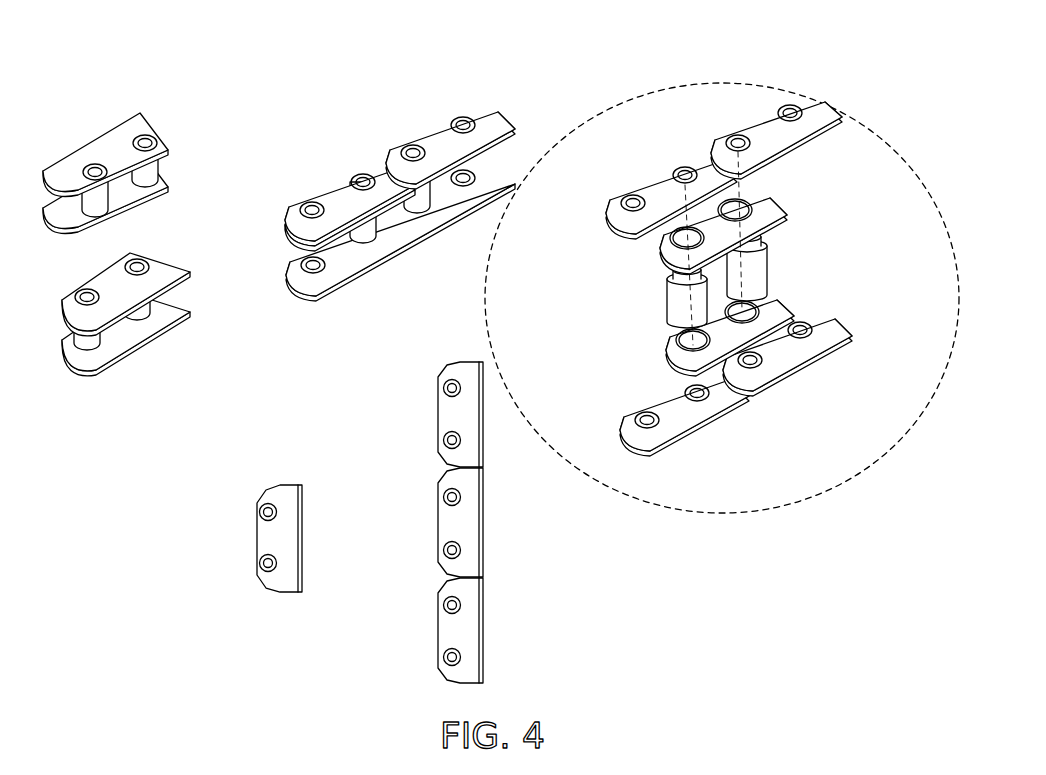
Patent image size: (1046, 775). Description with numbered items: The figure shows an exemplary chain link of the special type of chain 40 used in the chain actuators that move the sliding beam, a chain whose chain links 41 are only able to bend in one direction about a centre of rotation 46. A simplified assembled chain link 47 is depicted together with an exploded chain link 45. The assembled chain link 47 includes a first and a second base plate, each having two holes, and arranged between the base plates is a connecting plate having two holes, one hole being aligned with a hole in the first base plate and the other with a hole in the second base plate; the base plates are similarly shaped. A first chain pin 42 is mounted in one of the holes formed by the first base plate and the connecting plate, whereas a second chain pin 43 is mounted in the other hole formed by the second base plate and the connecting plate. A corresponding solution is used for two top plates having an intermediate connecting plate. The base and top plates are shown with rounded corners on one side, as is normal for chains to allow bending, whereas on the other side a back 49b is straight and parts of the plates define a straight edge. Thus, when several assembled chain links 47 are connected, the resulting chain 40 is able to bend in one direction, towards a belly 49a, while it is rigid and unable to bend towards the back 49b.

The chain 40 is at (477, 53).
The chain link 41 is at (137, 186).
The first chain pin 42 is at (755, 274).
The second chain pin 43 is at (667, 300).
The exploded chain link 45 is at (722, 329).
The centre of rotation 46 is at (458, 607).
The assembled chain link 47 is at (411, 234).
The belly 49a is at (437, 418).
The back 49b is at (484, 469).